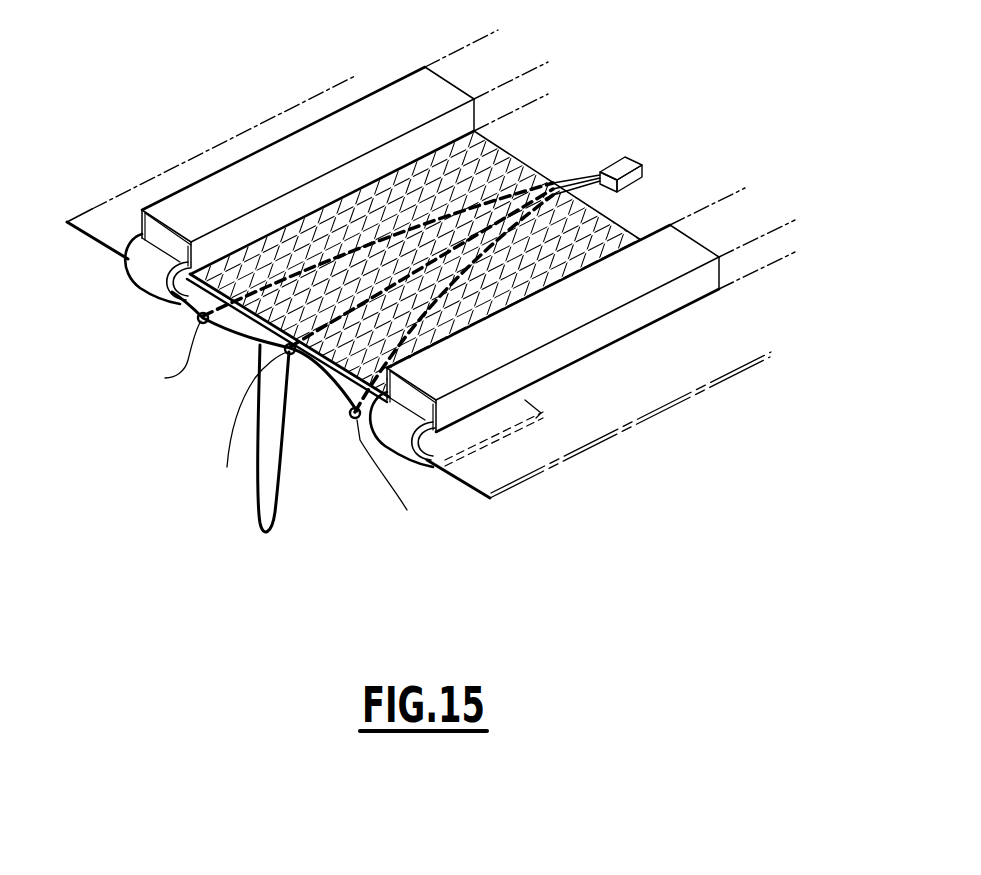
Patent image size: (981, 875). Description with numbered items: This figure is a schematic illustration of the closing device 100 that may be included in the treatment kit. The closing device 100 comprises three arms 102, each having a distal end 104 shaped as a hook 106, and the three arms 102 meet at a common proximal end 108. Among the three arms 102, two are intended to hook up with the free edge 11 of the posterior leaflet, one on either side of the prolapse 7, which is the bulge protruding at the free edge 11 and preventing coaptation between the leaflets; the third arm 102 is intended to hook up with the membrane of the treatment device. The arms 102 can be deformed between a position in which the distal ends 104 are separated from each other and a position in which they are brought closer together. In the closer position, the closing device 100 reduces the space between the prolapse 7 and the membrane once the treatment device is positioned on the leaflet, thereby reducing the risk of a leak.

The prolapse 7 is at (236, 512).
The free edge 11 is at (92, 258).
The closing device 100 is at (483, 272).
The arms 102 is at (373, 228).
The distal end 104 is at (199, 316).
The hook 106 is at (283, 433).
The common proximal end 108 is at (580, 176).